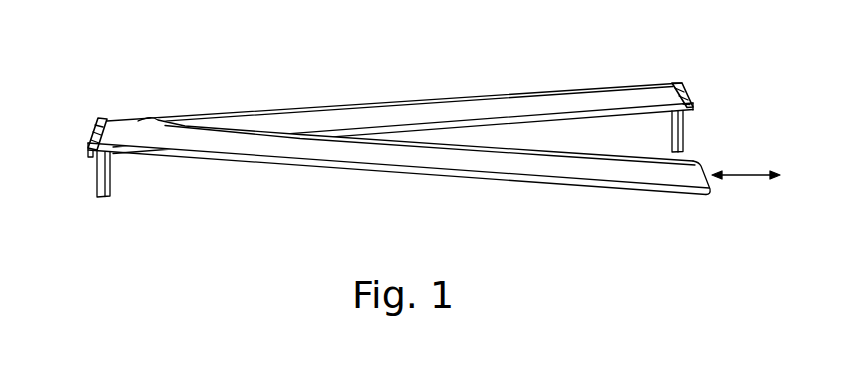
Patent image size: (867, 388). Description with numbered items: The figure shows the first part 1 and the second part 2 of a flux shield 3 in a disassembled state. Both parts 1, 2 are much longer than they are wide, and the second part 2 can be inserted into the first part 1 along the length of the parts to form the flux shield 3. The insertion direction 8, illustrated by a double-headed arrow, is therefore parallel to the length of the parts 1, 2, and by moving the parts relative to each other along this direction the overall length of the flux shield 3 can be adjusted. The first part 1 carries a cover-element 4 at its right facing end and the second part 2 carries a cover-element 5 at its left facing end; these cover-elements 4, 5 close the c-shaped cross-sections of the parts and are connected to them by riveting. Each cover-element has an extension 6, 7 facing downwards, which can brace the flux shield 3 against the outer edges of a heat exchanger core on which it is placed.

The first part 1 is at (587, 100).
The second part 2 is at (400, 167).
The flux shield 3 is at (411, 127).
The cover-element 4 is at (688, 88).
The cover-element 5 is at (97, 128).
The extension 6 is at (682, 125).
The extension 7 is at (96, 177).
The insertion direction 8 is at (755, 176).